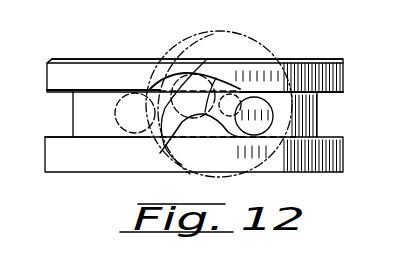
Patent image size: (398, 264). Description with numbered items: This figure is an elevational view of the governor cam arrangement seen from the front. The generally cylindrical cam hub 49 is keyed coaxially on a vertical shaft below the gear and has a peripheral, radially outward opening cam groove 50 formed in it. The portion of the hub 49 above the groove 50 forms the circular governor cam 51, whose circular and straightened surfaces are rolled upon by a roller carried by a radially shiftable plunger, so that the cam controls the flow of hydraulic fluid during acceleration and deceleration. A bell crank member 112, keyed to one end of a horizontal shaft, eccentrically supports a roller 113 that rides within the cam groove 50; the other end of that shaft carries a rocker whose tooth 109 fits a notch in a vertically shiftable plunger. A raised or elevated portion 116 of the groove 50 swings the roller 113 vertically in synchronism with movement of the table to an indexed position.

The cam hub 49 is at (100, 56).
The cam groove 50 is at (318, 115).
The governor cam 51 is at (65, 73).
The tooth 109 is at (147, 100).
The bell crank member 112 is at (268, 50).
The roller 113 is at (160, 117).
The raised portion of the groove 116 is at (167, 145).